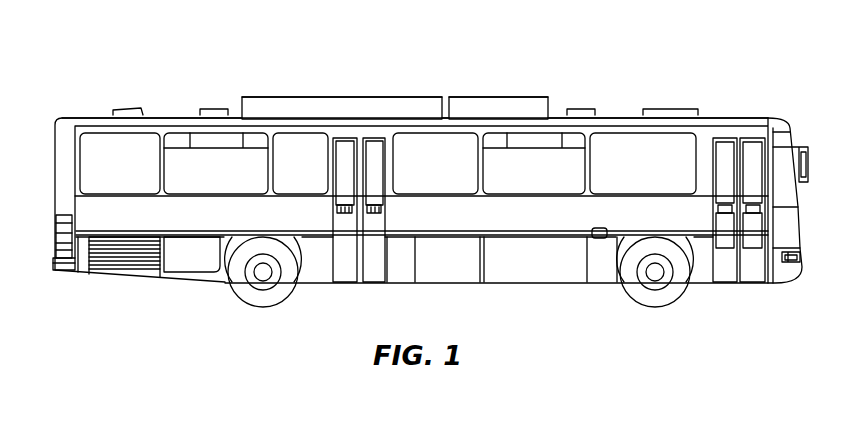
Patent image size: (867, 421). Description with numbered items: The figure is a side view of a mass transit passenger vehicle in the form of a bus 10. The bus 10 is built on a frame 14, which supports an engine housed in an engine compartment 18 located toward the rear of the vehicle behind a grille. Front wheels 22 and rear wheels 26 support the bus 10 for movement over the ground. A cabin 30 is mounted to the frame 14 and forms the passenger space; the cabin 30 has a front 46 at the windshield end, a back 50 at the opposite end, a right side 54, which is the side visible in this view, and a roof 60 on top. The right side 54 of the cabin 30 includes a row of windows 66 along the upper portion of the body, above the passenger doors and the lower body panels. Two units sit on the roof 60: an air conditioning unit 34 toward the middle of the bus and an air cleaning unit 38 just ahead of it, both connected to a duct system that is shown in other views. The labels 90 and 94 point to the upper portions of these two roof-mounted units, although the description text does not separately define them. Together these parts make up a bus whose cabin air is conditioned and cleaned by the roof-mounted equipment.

The bus 10 is at (704, 81).
The frame 14 is at (572, 283).
The engine compartment 18 is at (142, 262).
The front wheels 22 is at (658, 297).
The rear wheels 26 is at (265, 298).
The cabin 30 is at (525, 222).
The air conditioning unit 34 is at (305, 106).
The air cleaning unit 38 is at (495, 106).
The front 46 is at (800, 228).
The back 50 is at (55, 170).
The right side 54 is at (145, 214).
The roof 60 is at (620, 115).
The windows 66 is at (180, 146).
The first enclosure housing 90 is at (368, 100).
The second enclosure housing 94 is at (529, 97).